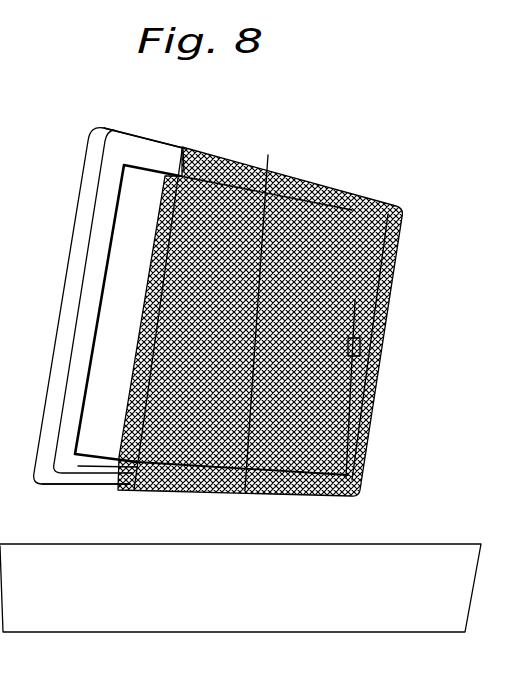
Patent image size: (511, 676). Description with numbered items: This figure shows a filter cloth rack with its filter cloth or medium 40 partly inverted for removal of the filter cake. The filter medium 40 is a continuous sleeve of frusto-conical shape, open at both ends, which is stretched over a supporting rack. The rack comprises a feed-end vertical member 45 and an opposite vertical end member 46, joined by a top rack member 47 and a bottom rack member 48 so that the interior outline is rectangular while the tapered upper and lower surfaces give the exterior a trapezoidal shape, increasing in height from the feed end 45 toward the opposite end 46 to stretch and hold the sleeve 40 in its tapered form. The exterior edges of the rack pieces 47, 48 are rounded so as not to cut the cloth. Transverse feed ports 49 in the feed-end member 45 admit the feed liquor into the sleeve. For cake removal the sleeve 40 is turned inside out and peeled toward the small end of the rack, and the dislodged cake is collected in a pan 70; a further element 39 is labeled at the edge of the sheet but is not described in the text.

The filter cloth or medium 40 is at (333, 192).
The feed-end vertical member 45 is at (385, 320).
The opposite vertical end member 46 is at (77, 243).
The top rack member 47 is at (127, 147).
The bottom rack member 48 is at (92, 477).
The transverse feed ports 49 is at (373, 352).
The pan 70 is at (370, 563).
The member 39 is at (12, 666).